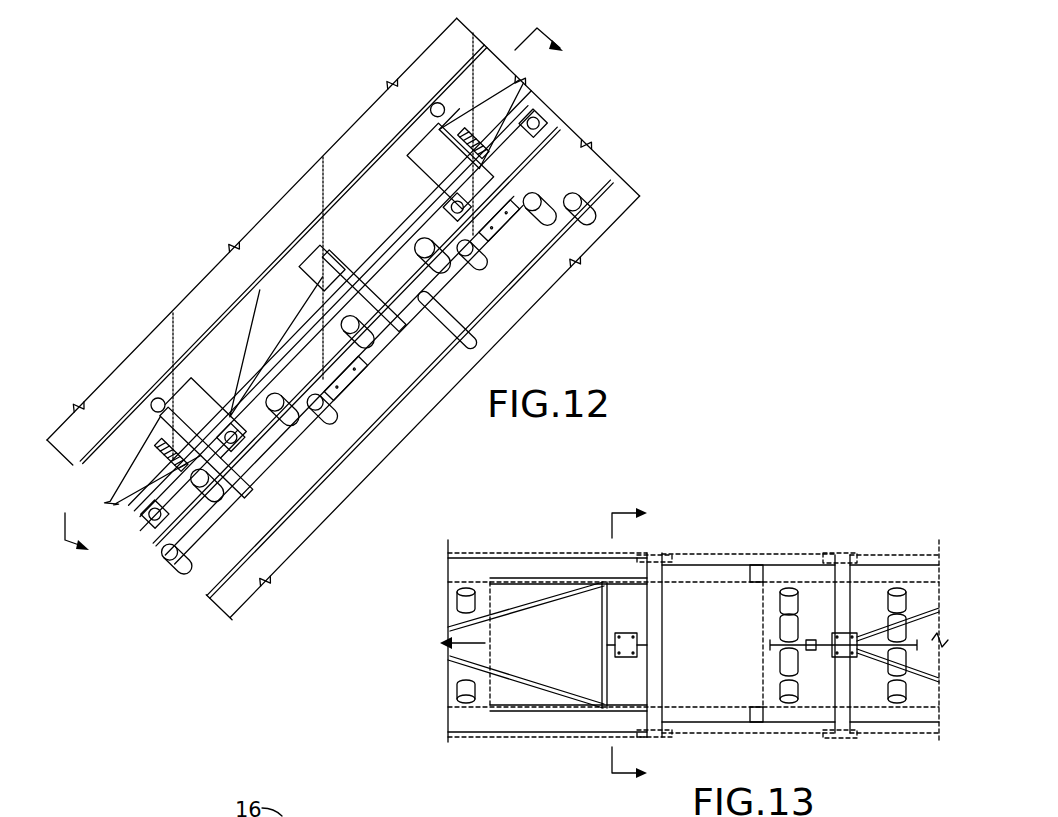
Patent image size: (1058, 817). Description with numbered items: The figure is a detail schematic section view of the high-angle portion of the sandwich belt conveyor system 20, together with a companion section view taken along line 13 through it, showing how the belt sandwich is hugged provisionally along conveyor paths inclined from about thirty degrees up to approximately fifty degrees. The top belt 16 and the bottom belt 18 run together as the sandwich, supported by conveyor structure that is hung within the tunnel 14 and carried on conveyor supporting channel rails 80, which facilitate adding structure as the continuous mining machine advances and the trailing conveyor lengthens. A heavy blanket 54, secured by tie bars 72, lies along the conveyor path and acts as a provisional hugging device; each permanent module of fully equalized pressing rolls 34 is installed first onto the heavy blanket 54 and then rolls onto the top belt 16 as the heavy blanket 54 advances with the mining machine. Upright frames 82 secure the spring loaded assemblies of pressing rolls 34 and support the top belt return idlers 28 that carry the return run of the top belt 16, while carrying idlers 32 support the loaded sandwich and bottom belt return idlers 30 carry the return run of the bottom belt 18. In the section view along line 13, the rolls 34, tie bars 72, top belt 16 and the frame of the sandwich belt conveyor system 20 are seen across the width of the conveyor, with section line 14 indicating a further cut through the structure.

In FIG. 12, the section line 13 is at (326, 302).
In FIG. 13, the tunnel 14 is at (644, 648).
In FIG. 12, the top belt 16 is at (288, 245).
In FIG. 13, the top belt 16 is at (920, 592).
In FIG. 12, the bottom belt 18 is at (280, 578).
In FIG. 13, the sandwich belt conveyor system 20 is at (468, 716).
In FIG. 12, the top belt return idlers 28 is at (150, 402).
In FIG. 12, the bottom belt return idlers 30 is at (233, 397).
In FIG. 12, the carrying idlers 32 is at (223, 500).
In FIG. 12, the modules of fully equalized pressing rolls 34 is at (368, 373).
In FIG. 13, the modules of fully equalized pressing rolls 34 is at (457, 607).
In FIG. 12, the heavy blanket 54 is at (307, 342).
In FIG. 13, the heavy blanket 54 is at (523, 593).
In FIG. 12, the tie bars 72 is at (447, 177).
In FIG. 13, the tie bars 72 is at (812, 555).
In FIG. 12, the conveyor supporting channel rails 80 is at (265, 465).
In FIG. 12, the upright frames 82 is at (342, 270).